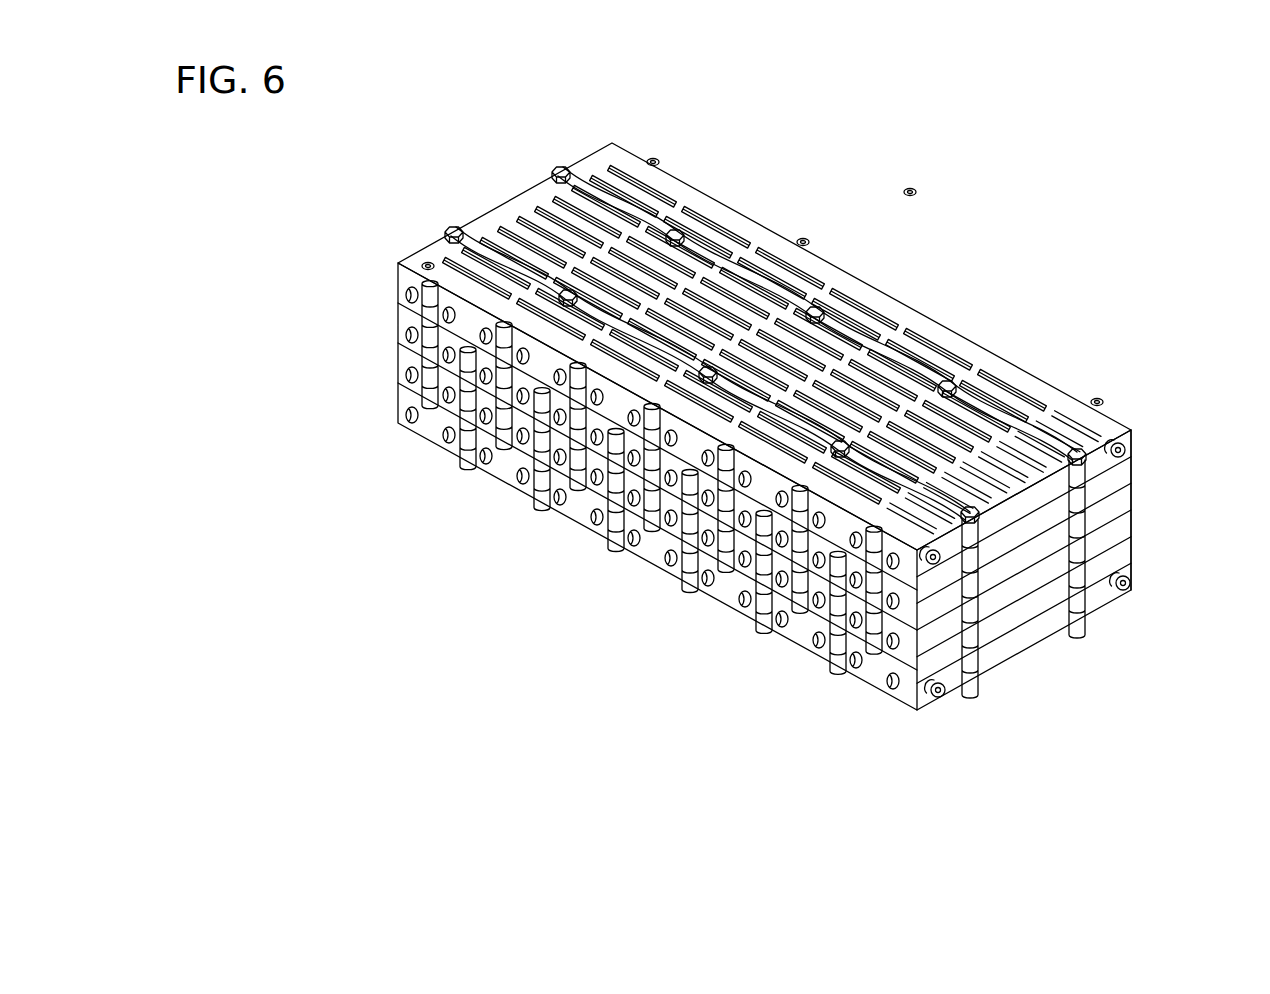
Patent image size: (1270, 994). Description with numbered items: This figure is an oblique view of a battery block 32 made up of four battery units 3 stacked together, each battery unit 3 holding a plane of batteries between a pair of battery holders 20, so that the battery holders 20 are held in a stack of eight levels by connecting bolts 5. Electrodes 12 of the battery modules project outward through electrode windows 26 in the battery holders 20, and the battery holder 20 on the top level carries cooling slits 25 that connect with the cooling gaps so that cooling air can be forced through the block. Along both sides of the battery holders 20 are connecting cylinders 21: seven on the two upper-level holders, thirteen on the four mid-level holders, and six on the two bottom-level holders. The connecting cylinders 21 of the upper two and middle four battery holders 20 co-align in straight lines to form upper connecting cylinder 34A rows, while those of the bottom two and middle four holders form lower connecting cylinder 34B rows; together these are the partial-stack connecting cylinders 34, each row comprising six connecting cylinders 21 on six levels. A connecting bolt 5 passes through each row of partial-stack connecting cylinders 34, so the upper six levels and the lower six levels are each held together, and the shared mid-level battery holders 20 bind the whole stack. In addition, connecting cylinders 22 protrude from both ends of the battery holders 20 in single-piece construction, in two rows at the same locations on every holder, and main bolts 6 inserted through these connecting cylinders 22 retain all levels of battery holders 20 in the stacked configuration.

The battery unit 3 is at (1220, 350).
The connecting bolt 5 is at (802, 239).
The main bolt 6 is at (552, 166).
The electrode 12 is at (713, 533).
The battery holder 20 is at (1112, 432).
The connecting cylinder 21 is at (430, 297).
The connecting cylinder 22 is at (957, 635).
The cooling slit 25 is at (603, 212).
The electrode window 26 is at (713, 560).
The battery block 32 is at (1105, 171).
The partial-stack connecting cylinders 34 is at (679, 543).
The upper connecting cylinder 34A is at (334, 237).
The lower connecting cylinder 34B is at (562, 587).